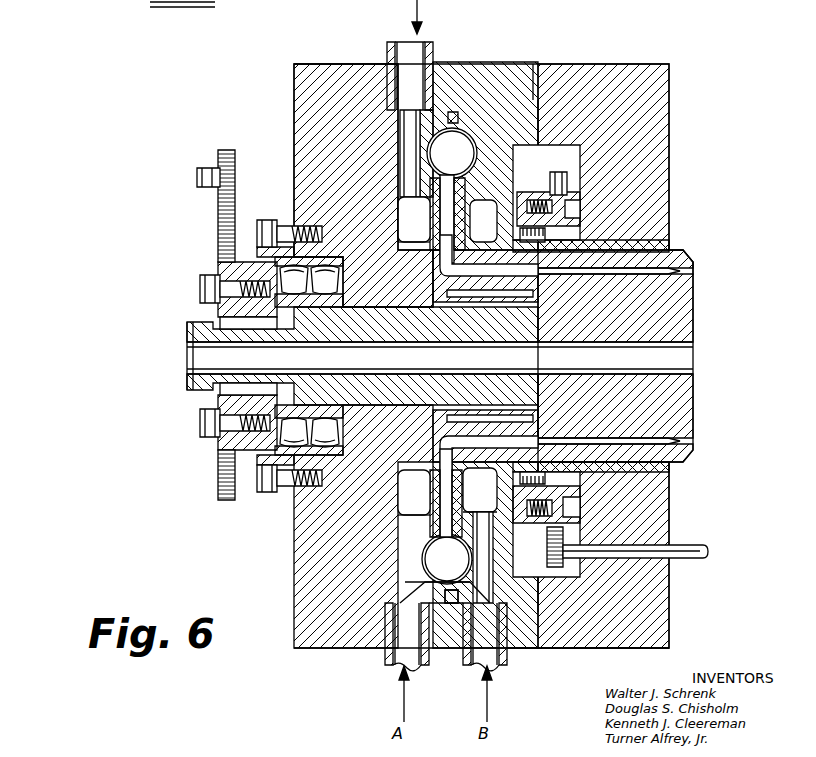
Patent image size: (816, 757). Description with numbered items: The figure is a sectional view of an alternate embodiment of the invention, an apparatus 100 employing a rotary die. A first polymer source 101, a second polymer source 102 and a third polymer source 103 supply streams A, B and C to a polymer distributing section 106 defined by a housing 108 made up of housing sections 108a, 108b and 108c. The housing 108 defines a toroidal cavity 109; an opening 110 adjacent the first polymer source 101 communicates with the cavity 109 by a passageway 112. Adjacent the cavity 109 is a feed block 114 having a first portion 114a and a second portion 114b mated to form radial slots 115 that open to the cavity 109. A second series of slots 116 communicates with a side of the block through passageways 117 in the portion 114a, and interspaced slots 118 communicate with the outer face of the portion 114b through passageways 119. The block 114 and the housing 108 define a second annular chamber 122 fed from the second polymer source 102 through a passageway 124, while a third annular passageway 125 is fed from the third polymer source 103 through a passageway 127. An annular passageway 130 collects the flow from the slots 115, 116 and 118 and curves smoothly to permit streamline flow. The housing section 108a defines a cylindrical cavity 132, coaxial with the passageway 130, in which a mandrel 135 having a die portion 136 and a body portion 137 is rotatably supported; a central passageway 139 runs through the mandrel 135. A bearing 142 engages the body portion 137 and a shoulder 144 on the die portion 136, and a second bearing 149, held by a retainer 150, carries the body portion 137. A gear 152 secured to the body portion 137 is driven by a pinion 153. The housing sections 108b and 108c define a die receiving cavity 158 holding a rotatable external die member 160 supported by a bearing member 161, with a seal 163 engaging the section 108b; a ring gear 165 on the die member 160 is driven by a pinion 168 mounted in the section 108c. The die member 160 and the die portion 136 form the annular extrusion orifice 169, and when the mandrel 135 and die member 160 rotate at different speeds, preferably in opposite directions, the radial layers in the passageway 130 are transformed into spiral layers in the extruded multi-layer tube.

The apparatus 100 is at (270, 72).
The first polymer source 101 is at (387, 658).
The second polymer source 102 is at (500, 670).
The third polymer source 103 is at (438, 17).
The polymer distributing section 106 is at (397, 203).
The housing 108 is at (297, 148).
The housing section 108a is at (343, 75).
The housing section 108b is at (494, 73).
The housing section 108c is at (613, 72).
The toroidal cavity 109 is at (447, 104).
The opening 110 is at (347, 649).
The passageway 112 is at (447, 660).
The feed block 114 is at (447, 187).
The first portion of feed block 114a is at (436, 253).
The second portion of feed block 114b is at (535, 68).
The slots 115 is at (414, 232).
The slots 116 is at (435, 516).
The passageways 117 is at (414, 506).
The slots 118 is at (480, 490).
The passageways 119 is at (480, 504).
The second annular chamber 122 is at (489, 456).
The passageway 124 is at (545, 648).
The third annular passageway 125 is at (393, 217).
The passageway 127 is at (404, 43).
The annular passageway 130 is at (579, 356).
The cylindrical cavity 132 is at (337, 329).
The mandrel 135 is at (187, 326).
The die portion 136 is at (693, 318).
The body portion 137 is at (288, 326).
The central passageway 139 is at (187, 350).
The bearing 142 is at (487, 270).
The shoulder 144 is at (533, 417).
The second bearing 149 is at (280, 493).
The retainer 150 is at (284, 220).
The gear 152 is at (218, 245).
The pinion 153 is at (218, 156).
The die receiving cavity 158 is at (580, 152).
The external die member 160 is at (560, 243).
The bearing member 161 is at (647, 243).
The seal 163 is at (583, 240).
The ring gear 165 is at (560, 182).
The pinion 168 is at (572, 560).
The annular extrusion orifice 169 is at (697, 264).